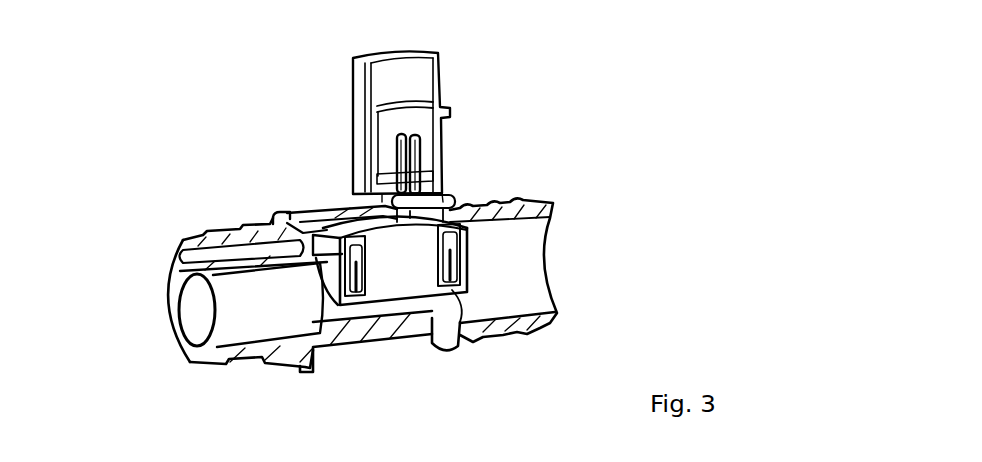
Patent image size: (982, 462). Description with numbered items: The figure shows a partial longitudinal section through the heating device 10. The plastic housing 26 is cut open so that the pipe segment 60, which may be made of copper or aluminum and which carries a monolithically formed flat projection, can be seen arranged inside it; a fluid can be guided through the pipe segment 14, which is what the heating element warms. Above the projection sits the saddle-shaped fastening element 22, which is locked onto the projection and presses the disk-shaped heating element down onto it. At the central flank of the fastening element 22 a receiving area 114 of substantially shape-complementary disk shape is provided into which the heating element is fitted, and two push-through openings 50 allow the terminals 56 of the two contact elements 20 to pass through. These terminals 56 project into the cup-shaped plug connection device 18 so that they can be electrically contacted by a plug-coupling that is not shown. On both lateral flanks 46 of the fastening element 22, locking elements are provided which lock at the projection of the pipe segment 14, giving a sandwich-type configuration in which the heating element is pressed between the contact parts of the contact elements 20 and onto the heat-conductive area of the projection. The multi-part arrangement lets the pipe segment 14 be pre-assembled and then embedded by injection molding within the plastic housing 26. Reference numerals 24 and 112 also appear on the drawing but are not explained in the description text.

The heating device 10 is at (640, 133).
The plug connection device 18 is at (443, 92).
The contact elements 20 is at (384, 126).
The terminals 56 is at (398, 148).
The push-through openings 50 is at (422, 196).
The receiving area 114 is at (363, 222).
The plastic housing 26 is at (290, 202).
The pipe connection 24 is at (213, 232).
The fastening element 22 is at (484, 266).
The lateral flanks 46 is at (420, 300).
The wall 112 is at (378, 333).
The pipe segment 14 is at (205, 319).
The pipe segment 60 is at (195, 322).